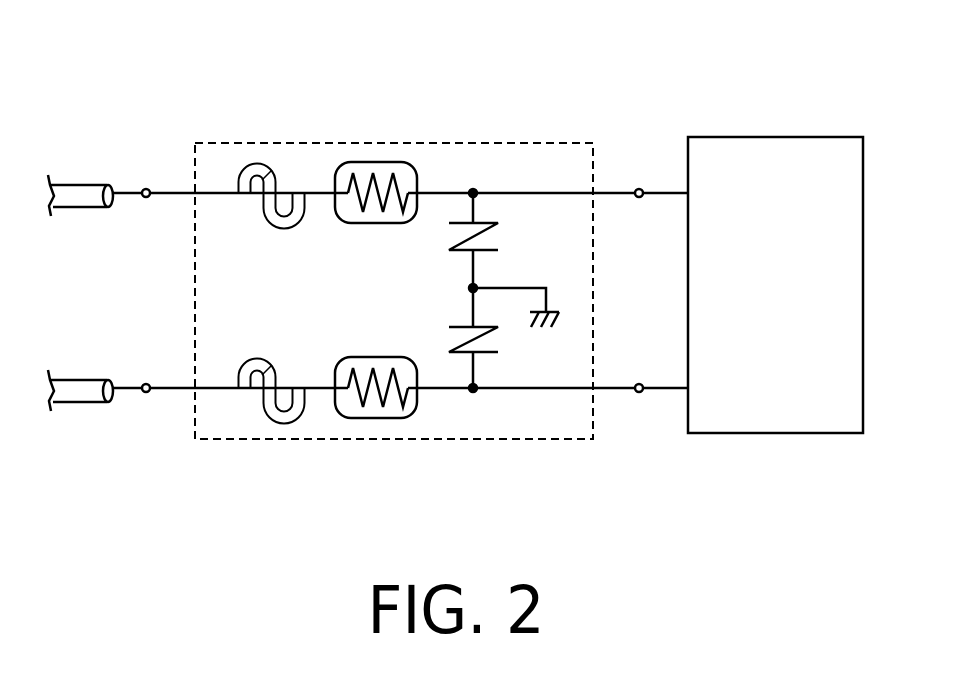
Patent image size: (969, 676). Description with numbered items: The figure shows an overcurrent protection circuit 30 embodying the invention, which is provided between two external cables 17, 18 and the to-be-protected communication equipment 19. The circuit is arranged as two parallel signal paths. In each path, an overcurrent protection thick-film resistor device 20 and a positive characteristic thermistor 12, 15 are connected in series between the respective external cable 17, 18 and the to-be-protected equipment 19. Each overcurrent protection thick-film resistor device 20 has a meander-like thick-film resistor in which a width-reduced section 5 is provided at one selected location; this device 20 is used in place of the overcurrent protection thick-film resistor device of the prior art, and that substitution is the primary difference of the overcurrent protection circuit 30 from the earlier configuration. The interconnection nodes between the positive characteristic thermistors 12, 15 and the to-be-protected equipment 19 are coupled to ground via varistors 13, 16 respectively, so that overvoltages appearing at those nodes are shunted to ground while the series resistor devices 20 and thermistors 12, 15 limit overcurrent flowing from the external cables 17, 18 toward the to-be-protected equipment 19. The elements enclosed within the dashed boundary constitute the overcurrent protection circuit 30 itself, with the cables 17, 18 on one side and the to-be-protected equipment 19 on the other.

The external cable 17 is at (82, 178).
The external cable 18 is at (84, 375).
The overcurrent protection thick-film resistor device 20 is at (257, 162).
The width-reduced section 5 is at (275, 176).
The positive characteristic thermistor 12 is at (383, 162).
The positive characteristic thermistor 15 is at (385, 357).
The varistor 13 is at (486, 214).
The varistor 16 is at (462, 325).
The overcurrent protection circuit 30 is at (428, 117).
The to-be-protected equipment 19 is at (757, 137).